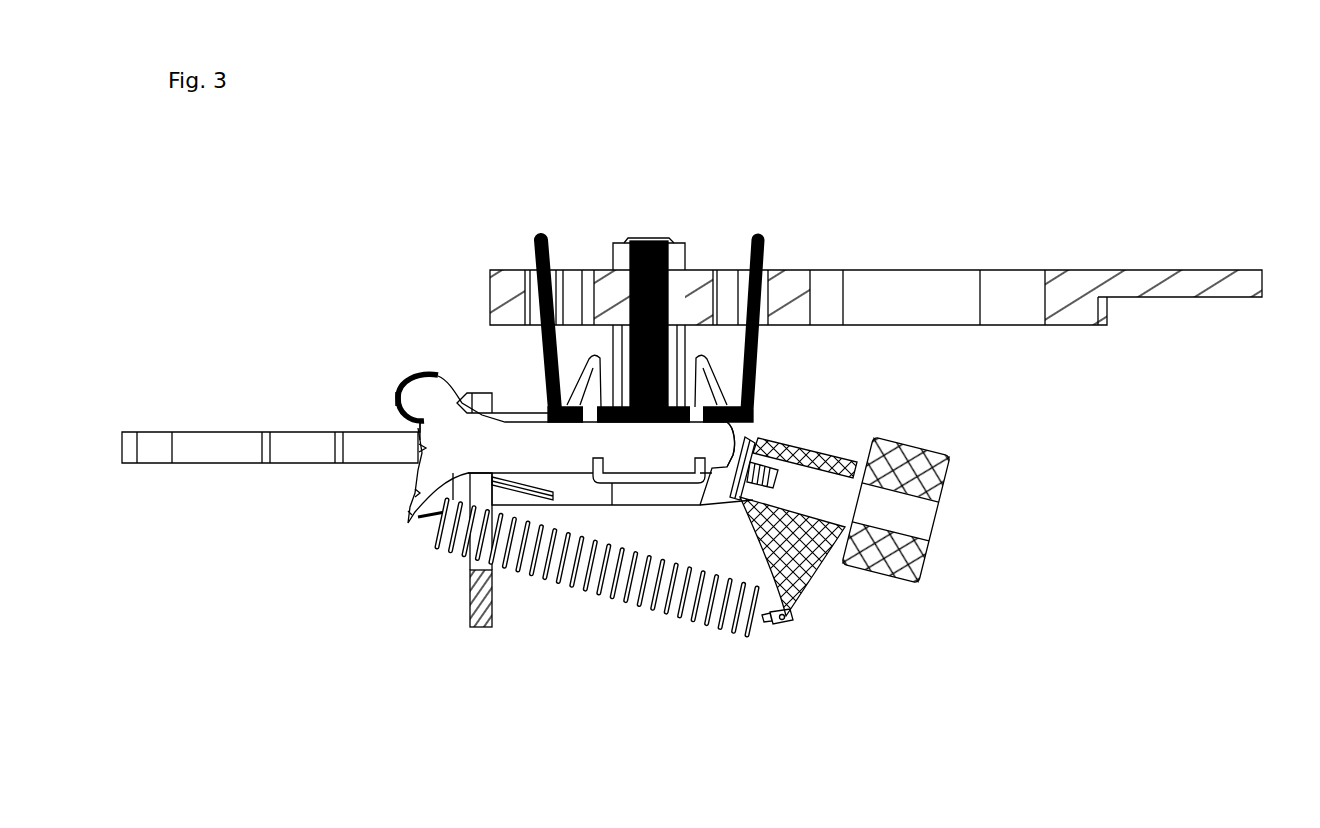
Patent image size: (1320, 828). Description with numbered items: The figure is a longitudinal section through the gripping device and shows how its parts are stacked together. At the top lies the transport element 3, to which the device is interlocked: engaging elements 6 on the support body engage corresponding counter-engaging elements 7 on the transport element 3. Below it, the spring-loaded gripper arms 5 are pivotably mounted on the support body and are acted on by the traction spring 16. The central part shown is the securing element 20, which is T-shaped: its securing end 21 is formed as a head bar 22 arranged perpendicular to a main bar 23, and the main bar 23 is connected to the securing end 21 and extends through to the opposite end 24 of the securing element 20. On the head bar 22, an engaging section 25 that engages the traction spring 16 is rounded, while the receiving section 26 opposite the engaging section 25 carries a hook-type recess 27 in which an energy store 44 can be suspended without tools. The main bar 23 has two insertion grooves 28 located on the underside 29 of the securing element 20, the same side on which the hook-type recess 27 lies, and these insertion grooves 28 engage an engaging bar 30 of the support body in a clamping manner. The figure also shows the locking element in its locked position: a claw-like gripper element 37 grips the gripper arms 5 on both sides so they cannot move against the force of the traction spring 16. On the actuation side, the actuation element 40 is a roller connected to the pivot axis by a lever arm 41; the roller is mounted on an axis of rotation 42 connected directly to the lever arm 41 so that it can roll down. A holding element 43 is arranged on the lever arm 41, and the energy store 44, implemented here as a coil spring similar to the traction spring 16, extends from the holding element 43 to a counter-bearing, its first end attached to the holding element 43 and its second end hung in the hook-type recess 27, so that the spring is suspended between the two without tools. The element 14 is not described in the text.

The transport element 3 is at (1087, 268).
The gripper arms 5 is at (150, 430).
The engaging elements 6 is at (528, 253).
The counter-engaging elements 7 is at (560, 268).
The lever edge 14 is at (407, 433).
The traction spring 16 is at (412, 372).
The securing element 20 is at (543, 433).
The securing end 21 is at (410, 434).
The head bar 22 is at (426, 448).
The main bar 23 is at (577, 447).
The end of the securing element 24 is at (728, 430).
The engaging section 25 is at (385, 403).
The receiving section 26 is at (418, 493).
The hook-type recess 27 is at (408, 515).
The insertion grooves 28 is at (702, 444).
The underside 29 is at (645, 458).
The engaging bar 30 is at (603, 458).
The claw-like gripper element 37 is at (468, 617).
The actuation element 40 is at (940, 464).
The lever arm 41 is at (810, 553).
The axis of rotation 42 is at (878, 484).
The holding element 43 is at (791, 613).
The energy store 44 is at (577, 583).